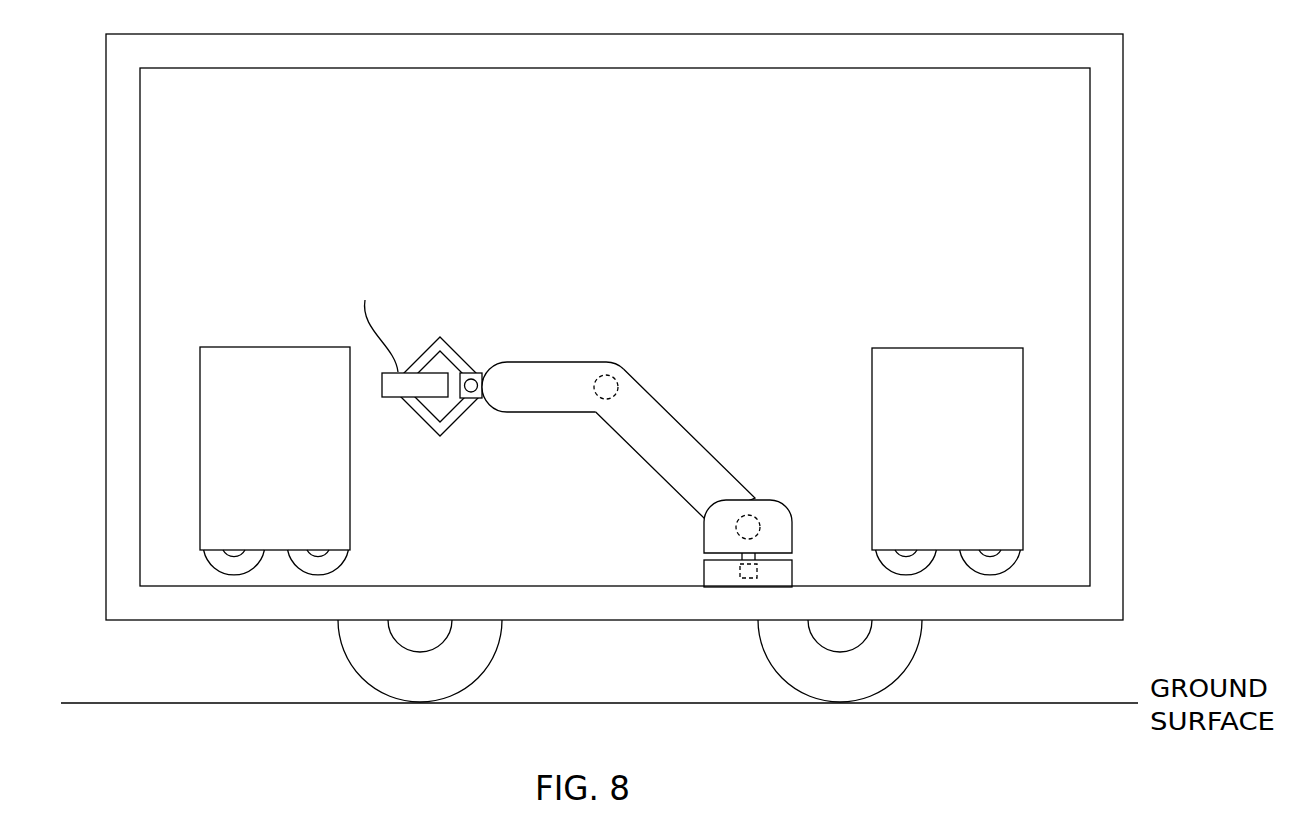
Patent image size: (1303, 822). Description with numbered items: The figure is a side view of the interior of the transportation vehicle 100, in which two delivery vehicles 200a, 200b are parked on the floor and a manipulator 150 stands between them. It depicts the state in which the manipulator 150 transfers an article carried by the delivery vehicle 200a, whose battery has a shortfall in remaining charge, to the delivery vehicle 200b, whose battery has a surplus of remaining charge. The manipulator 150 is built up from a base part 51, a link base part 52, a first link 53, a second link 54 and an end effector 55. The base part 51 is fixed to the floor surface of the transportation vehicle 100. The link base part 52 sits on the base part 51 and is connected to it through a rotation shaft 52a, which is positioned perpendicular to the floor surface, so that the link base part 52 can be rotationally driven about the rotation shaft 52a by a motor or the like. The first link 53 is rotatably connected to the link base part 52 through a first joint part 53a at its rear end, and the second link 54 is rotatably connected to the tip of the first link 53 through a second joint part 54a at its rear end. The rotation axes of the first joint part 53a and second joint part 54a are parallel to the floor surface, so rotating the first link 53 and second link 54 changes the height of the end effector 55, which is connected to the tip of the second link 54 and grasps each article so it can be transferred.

The transportation vehicle 100 is at (1124, 352).
The manipulator 150 is at (585, 428).
The delivery vehicle 200a is at (224, 356).
The delivery vehicle 200b is at (897, 355).
The base part 51 is at (793, 580).
The link base part 52 is at (781, 515).
The rotation shaft 52a is at (740, 572).
The first link 53 is at (690, 440).
The first joint part 53a is at (752, 513).
The second link 54 is at (541, 413).
The second joint part 54a is at (613, 372).
The end effector 55 is at (460, 355).